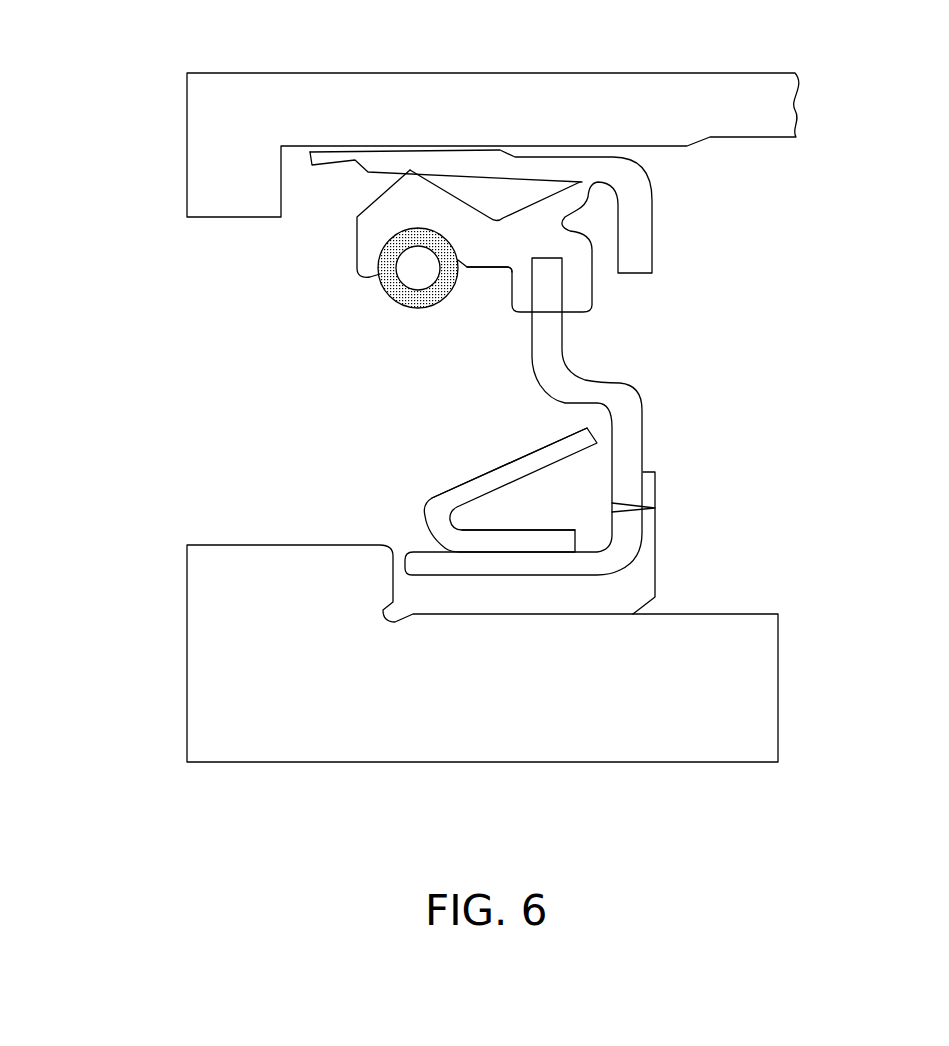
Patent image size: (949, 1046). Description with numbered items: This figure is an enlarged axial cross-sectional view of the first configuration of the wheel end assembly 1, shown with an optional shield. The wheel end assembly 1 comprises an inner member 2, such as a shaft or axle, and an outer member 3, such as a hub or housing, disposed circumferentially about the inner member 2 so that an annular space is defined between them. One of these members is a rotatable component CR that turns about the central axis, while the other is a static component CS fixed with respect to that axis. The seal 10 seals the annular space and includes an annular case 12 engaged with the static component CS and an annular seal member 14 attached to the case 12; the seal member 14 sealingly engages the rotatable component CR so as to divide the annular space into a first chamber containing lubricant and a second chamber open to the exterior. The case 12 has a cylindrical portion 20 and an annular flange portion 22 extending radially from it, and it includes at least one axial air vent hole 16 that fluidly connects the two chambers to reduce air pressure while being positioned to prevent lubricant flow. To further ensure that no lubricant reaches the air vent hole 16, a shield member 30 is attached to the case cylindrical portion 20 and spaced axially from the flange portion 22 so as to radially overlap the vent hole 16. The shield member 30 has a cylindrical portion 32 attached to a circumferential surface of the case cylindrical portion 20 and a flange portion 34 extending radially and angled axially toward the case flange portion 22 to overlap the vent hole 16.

The wheel end assembly 1 is at (868, 203).
The inner member 2 is at (185, 686).
The outer member 3 is at (628, 70).
The seal 10 is at (730, 282).
The annular case 12 is at (476, 355).
The annular seal member 14 is at (308, 234).
The axial air vent hole 16 is at (645, 523).
The cylindrical portion 20 is at (537, 642).
The annular flange portion 22 is at (616, 352).
The shield member 30 is at (486, 436).
The cylindrical portion 32 is at (518, 538).
The flange portion 34 is at (495, 465).
The rotatable component CR is at (740, 85).
The static component CS is at (757, 713).